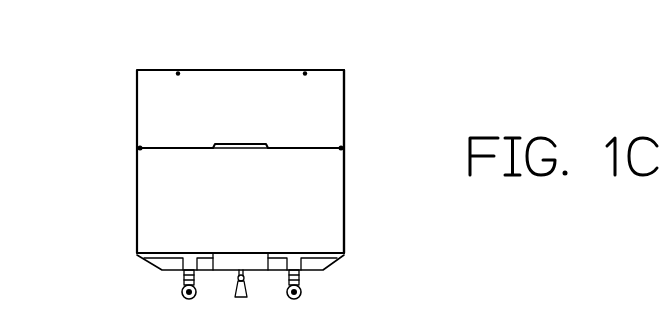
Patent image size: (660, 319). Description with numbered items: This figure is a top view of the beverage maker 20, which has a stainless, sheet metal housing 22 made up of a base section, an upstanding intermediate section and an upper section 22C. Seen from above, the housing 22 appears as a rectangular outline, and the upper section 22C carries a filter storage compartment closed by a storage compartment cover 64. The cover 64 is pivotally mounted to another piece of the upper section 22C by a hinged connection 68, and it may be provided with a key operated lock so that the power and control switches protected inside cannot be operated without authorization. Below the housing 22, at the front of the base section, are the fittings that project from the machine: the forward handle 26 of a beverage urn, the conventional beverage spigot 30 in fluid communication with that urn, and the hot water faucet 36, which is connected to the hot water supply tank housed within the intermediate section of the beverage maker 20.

The beverage maker 20 is at (350, 232).
The housing 22 is at (344, 118).
The upper section 22C is at (330, 186).
The forward handle 26 is at (340, 258).
The beverage spigot 30 is at (298, 296).
The hot water faucet 36 is at (237, 296).
The storage compartment cover 64 is at (344, 213).
The hinged connection 68 is at (240, 148).